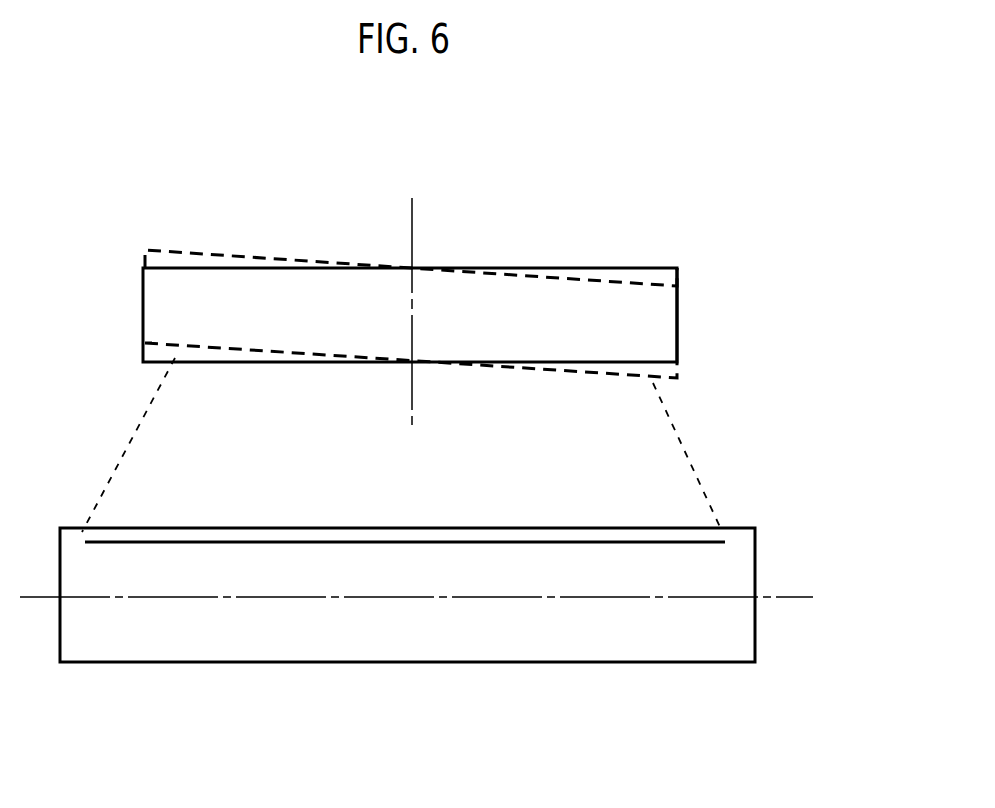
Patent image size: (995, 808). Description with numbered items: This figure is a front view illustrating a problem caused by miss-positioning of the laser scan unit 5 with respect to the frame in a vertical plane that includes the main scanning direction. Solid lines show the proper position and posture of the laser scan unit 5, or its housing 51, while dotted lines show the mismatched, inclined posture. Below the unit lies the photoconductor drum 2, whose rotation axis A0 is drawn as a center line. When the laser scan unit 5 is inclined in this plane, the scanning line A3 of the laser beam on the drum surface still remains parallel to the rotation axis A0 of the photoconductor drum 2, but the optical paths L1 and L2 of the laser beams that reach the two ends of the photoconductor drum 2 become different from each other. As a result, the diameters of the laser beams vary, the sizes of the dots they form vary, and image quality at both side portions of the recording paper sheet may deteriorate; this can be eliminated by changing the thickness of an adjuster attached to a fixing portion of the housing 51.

The laser scan unit 5 is at (575, 267).
The housing 51 is at (679, 308).
The photoconductor drum 2 is at (526, 645).
The scanning line A3 is at (712, 540).
The rotation axis A0 is at (441, 595).
The optical path L1 is at (115, 470).
The optical path L2 is at (692, 462).